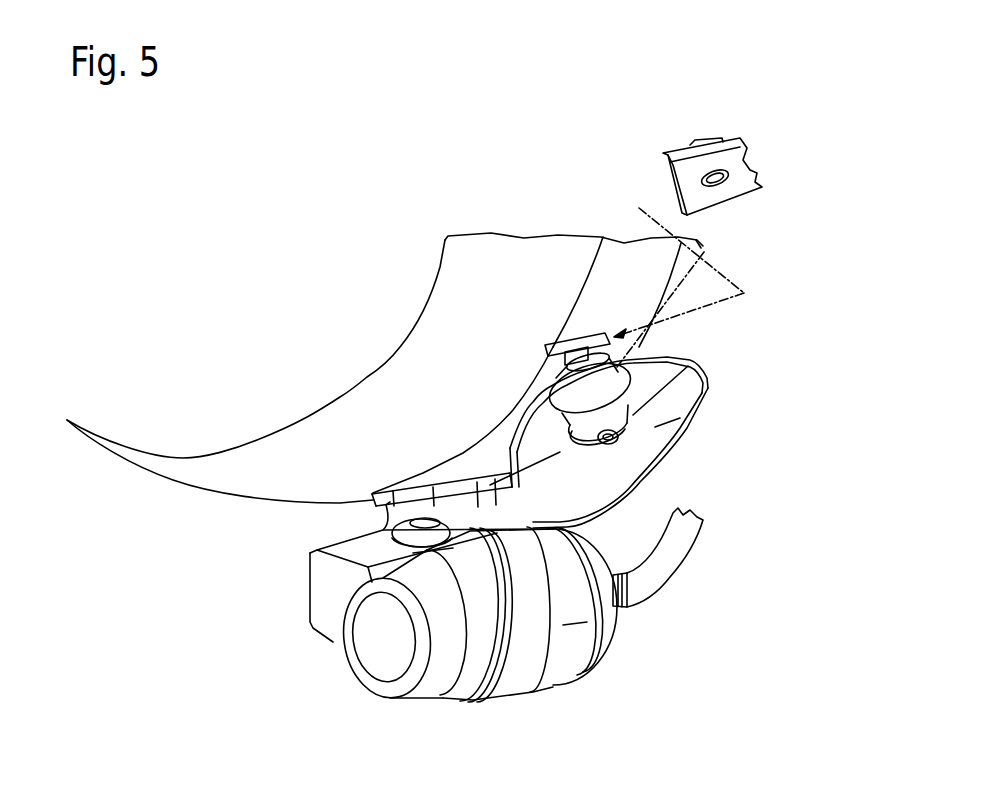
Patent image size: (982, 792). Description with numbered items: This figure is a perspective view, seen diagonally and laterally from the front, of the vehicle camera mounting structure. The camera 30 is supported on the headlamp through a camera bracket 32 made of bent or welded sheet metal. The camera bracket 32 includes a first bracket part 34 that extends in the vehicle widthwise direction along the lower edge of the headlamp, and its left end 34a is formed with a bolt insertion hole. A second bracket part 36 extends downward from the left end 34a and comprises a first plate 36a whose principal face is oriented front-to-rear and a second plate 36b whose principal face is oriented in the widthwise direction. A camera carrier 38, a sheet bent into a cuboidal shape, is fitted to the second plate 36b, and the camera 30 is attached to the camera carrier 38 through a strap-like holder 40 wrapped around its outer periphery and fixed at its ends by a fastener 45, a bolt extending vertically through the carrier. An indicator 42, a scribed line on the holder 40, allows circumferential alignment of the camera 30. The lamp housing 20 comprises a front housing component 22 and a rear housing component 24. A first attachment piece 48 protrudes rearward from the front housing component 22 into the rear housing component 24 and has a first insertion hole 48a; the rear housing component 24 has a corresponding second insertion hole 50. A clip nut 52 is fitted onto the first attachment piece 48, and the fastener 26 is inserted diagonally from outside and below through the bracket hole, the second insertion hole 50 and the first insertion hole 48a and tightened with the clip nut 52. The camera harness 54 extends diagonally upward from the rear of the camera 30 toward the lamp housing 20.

The lamp housing 20 is at (427, 320).
The front housing component 22 is at (463, 252).
The rear housing component 24 is at (704, 252).
The fastener 26 is at (622, 440).
The camera 30 is at (460, 717).
The camera bracket 32 is at (715, 390).
The first bracket part 34 is at (588, 412).
The left end of the first bracket part 34a is at (668, 353).
The second bracket part 36 is at (501, 536).
The first plate 36a is at (667, 423).
The second plate 36b is at (305, 610).
The camera carrier 38 is at (328, 630).
The holder 40 is at (553, 673).
The indicator 42 is at (537, 528).
The fastener 45 is at (380, 515).
The first attachment piece 48 is at (541, 347).
The first insertion hole 48a is at (603, 347).
The second insertion hole 50 is at (672, 412).
The clip nut 52 is at (747, 137).
The camera harness 54 is at (680, 565).